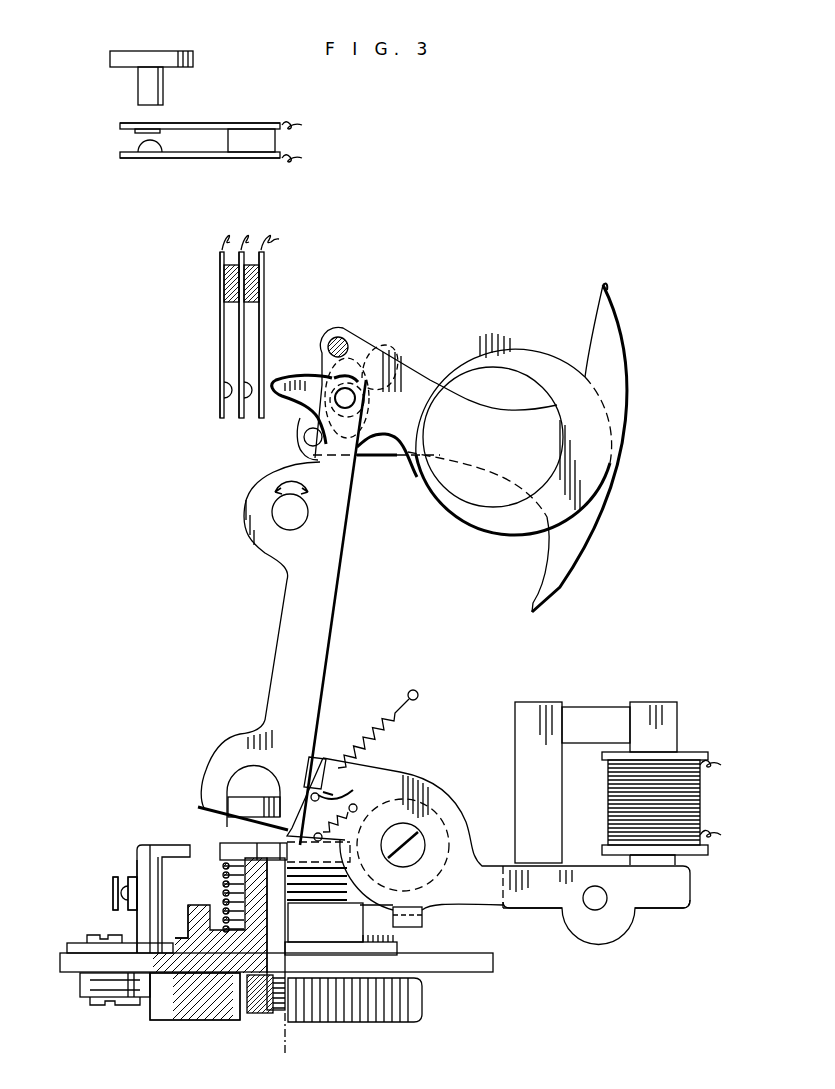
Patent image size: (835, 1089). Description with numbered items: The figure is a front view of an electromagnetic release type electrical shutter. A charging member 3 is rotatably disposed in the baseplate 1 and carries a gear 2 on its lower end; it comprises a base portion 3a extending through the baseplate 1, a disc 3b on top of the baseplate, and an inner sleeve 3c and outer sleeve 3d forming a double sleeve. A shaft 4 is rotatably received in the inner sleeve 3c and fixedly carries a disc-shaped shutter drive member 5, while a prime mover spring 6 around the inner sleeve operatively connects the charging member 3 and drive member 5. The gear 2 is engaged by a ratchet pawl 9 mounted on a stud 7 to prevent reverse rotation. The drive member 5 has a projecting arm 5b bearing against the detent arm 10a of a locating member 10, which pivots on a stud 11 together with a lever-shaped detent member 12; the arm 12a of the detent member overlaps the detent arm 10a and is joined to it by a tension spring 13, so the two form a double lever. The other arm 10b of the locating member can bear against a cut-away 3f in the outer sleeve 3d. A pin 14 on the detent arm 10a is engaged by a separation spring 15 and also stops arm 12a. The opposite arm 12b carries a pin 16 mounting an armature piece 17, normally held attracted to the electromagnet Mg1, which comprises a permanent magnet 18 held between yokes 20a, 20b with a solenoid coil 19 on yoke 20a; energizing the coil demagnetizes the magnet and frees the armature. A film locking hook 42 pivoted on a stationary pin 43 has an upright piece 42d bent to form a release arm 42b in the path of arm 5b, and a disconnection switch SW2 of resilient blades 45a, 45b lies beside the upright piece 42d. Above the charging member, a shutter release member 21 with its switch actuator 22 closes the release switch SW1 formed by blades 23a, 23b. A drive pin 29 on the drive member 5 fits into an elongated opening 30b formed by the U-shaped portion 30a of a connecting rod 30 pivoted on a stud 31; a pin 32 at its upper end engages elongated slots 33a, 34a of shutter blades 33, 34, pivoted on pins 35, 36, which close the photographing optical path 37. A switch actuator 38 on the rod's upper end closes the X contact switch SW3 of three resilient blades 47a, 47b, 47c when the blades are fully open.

The baseplate 1 is at (478, 972).
The gear 2 is at (414, 998).
The charging member 3 is at (205, 885).
The base portion 3a is at (218, 1020).
The disc 3b is at (398, 944).
The inner sleeve 3c is at (222, 885).
The outer sleeve 3d is at (198, 912).
The cut-away 3f is at (393, 905).
The shaft 4 is at (280, 905).
The shutter drive member 5 is at (226, 852).
The projecting arm 5b is at (264, 796).
The prime mover spring 6 is at (303, 895).
The stud 7 is at (92, 1003).
The ratchet pawl 9 is at (80, 990).
The locating member 10 is at (456, 810).
The detent arm 10a is at (292, 778).
The arm 10b is at (422, 923).
The stud 11 is at (420, 852).
The detent member 12 is at (470, 828).
The arm 12a is at (323, 760).
The arm 12b is at (520, 908).
The tension spring 13 is at (348, 822).
The pin 14 is at (348, 790).
The separation spring 15 is at (376, 722).
The pin 16 is at (605, 905).
The armature piece 17 is at (660, 908).
The permanent magnet 18 is at (596, 707).
The solenoid coil 19 is at (690, 788).
The yoke 20a is at (646, 700).
The yoke 20b is at (528, 700).
The shutter release member 21 is at (168, 62).
The switch actuator 22 is at (138, 88).
The resilient blade 23a is at (210, 118).
The resilient blade 23b is at (192, 158).
The drive pin 29 is at (228, 790).
The connecting rod 30 is at (280, 640).
The U-shaped portion 30a is at (204, 806).
The elongated opening 30b is at (243, 742).
The stud 31 is at (300, 518).
The pin 32 is at (355, 398).
The shutter blade 33 is at (440, 515).
The elongated slot 33a is at (338, 374).
The shutter blade 34 is at (524, 342).
The elongated slot 34a is at (388, 345).
The pin 35 is at (340, 336).
The pin 36 is at (304, 435).
The photographing optical path 37 is at (548, 358).
The switch actuator 38 is at (292, 386).
The film locking hook 42 is at (67, 950).
The release arm 42b is at (175, 845).
The upright piece 42d is at (137, 920).
The stationary pin 43 is at (90, 940).
The resilient blade 45a is at (128, 893).
The resilient blade 45b is at (113, 885).
The resilient blade 47a is at (220, 320).
The resilient blade 47b is at (239, 335).
The resilient blade 47c is at (264, 318).
The release switch SW1 is at (253, 117).
The disconnection switch SW2 is at (124, 865).
The X contact switch SW3 is at (209, 289).
The electromagnet Mg1 is at (629, 765).